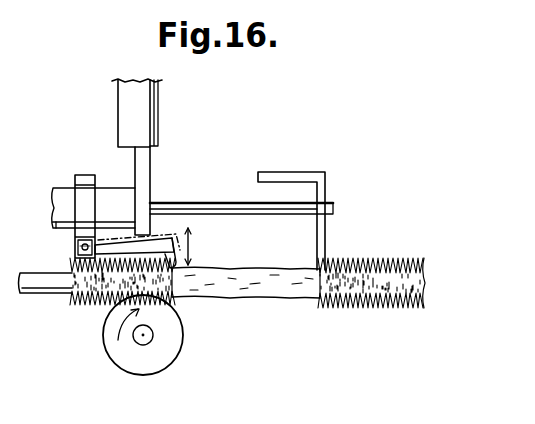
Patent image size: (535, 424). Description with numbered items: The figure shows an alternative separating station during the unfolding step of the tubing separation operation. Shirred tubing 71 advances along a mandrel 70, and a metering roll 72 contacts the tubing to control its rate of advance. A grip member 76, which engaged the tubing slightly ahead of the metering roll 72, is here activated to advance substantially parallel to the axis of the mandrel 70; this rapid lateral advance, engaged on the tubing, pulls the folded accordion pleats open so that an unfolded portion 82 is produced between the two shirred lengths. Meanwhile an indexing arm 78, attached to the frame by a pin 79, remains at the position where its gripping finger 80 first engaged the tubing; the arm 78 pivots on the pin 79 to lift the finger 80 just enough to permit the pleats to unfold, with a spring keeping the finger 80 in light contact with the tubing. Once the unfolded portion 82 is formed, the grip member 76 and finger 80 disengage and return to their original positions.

The mandrel 70 is at (32, 292).
The shirred tubing 71 is at (84, 306).
The metering roll 72 is at (139, 362).
The grip member 76 is at (326, 240).
The indexing arm 78 is at (108, 245).
The pin 79 is at (76, 243).
The gripping finger 80 is at (176, 267).
The unfolded portion 82 is at (254, 299).